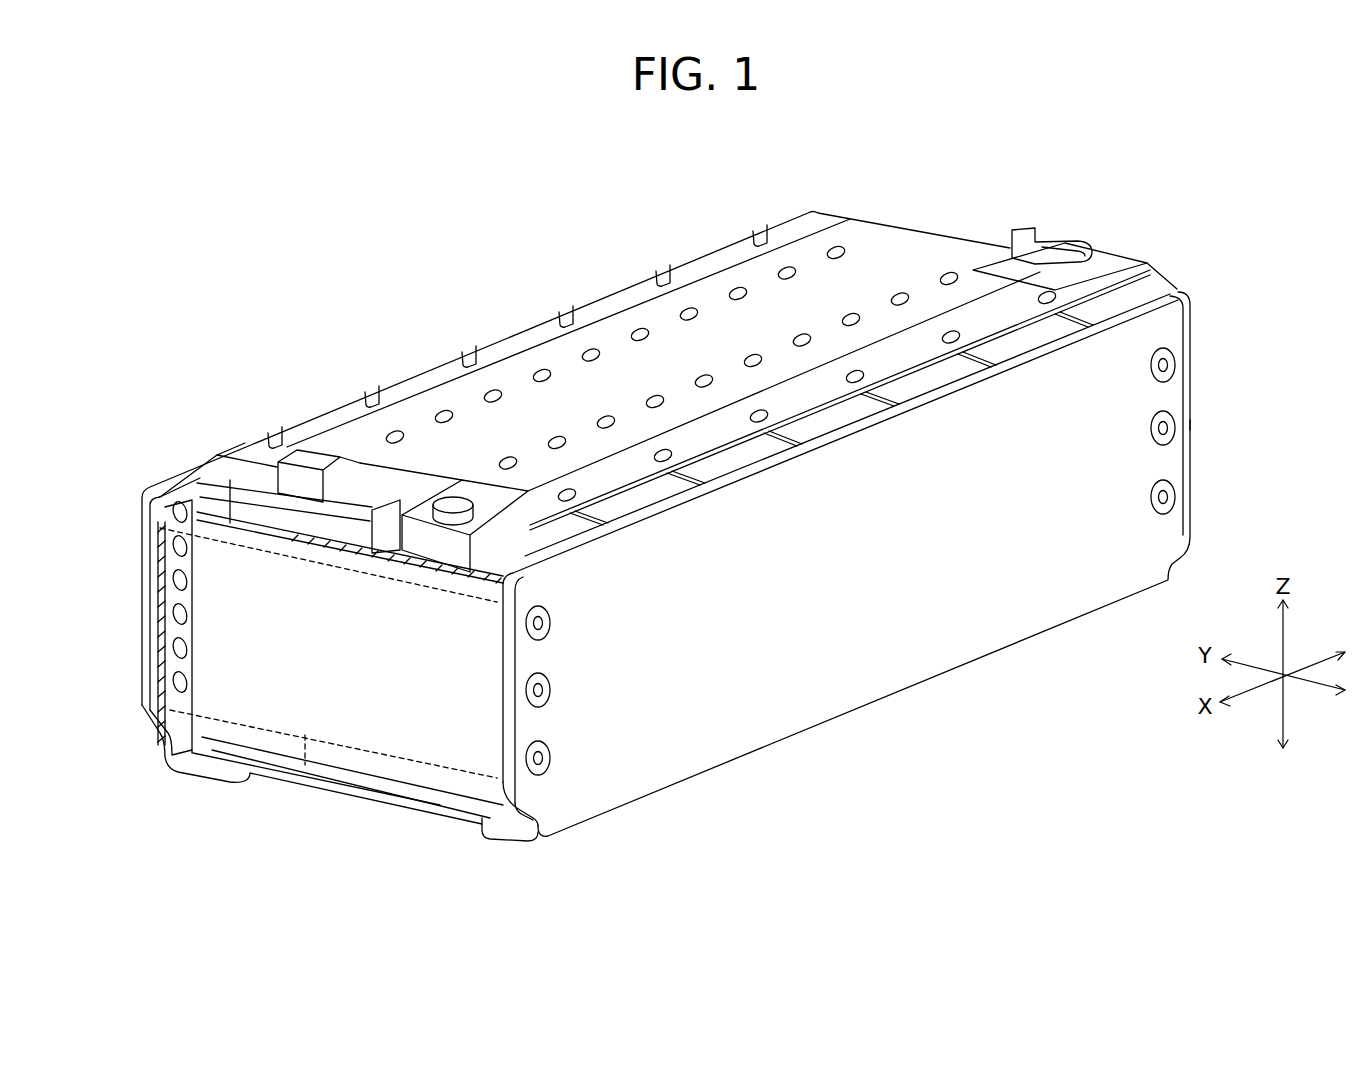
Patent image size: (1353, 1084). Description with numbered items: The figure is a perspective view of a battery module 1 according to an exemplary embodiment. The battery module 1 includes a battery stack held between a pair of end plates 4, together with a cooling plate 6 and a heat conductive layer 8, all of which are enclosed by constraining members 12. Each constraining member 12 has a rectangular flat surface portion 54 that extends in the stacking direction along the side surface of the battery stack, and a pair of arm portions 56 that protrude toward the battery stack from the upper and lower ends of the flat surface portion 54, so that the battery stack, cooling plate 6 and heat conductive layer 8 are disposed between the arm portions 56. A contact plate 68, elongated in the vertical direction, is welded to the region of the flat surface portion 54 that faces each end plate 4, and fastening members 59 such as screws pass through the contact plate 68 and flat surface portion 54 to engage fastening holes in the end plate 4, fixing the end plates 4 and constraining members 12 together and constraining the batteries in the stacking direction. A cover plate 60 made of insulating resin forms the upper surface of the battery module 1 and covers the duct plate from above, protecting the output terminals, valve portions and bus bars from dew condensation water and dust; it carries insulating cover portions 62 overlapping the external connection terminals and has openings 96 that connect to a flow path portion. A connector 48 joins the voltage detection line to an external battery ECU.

The battery module 1 is at (573, 940).
The end plate 4 is at (305, 790).
The cooling plate 6 is at (410, 806).
The heat conductive layer 8 is at (373, 793).
The constraining member 12 is at (148, 488).
The connector 48 is at (283, 452).
The flat surface portion 54 is at (142, 630).
The arm portion 56 is at (190, 470).
The fastening member 59 is at (1185, 498).
The cover plate 60 is at (905, 214).
The insulating cover portion 62 is at (1098, 235).
The contact plate 68 is at (156, 580).
The opening 96 is at (762, 236).